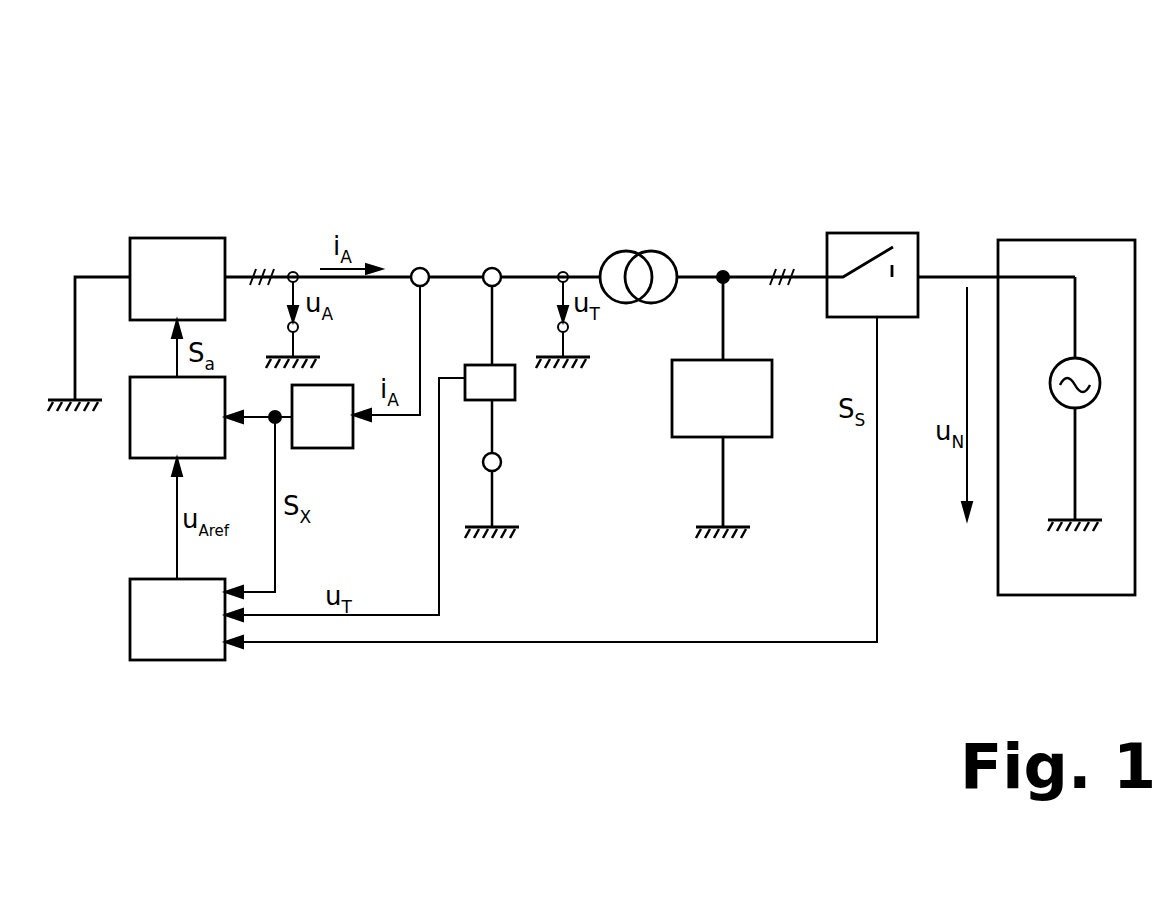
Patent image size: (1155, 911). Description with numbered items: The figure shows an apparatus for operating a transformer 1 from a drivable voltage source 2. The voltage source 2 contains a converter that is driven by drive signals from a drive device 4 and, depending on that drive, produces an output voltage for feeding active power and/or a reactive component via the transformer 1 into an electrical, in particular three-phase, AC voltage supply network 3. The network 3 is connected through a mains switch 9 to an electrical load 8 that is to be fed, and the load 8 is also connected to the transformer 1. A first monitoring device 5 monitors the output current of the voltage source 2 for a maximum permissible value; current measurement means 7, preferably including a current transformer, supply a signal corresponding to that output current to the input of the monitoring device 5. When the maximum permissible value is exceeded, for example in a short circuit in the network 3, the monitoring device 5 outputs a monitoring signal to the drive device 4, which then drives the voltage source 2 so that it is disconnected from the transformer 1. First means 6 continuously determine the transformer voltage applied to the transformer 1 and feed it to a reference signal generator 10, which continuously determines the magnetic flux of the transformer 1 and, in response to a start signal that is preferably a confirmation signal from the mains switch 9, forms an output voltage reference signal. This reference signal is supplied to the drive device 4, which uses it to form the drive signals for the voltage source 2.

The transformer 1 is at (622, 252).
The voltage source 2 is at (177, 279).
The AC voltage supply network 3 is at (1025, 240).
The drive device 4 is at (177, 417).
The first monitoring device 5 is at (322, 416).
The first means 6 is at (469, 364).
The current measurement means 7 is at (417, 268).
The electrical load 8 is at (722, 404).
The mains switch 9 is at (870, 232).
The reference signal generator 10 is at (177, 619).